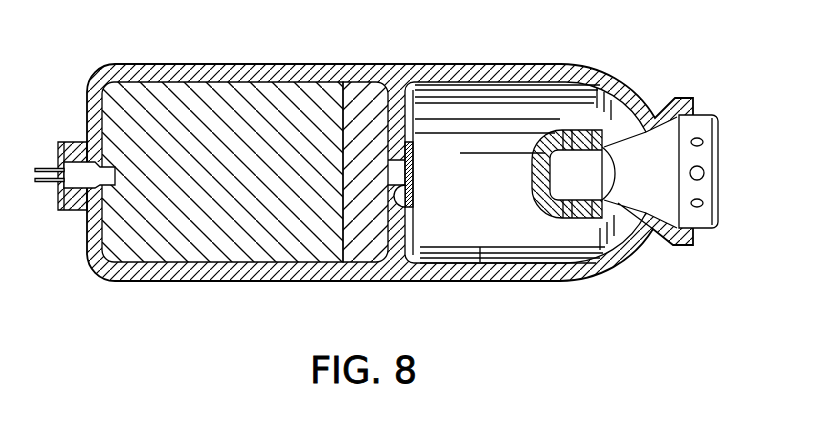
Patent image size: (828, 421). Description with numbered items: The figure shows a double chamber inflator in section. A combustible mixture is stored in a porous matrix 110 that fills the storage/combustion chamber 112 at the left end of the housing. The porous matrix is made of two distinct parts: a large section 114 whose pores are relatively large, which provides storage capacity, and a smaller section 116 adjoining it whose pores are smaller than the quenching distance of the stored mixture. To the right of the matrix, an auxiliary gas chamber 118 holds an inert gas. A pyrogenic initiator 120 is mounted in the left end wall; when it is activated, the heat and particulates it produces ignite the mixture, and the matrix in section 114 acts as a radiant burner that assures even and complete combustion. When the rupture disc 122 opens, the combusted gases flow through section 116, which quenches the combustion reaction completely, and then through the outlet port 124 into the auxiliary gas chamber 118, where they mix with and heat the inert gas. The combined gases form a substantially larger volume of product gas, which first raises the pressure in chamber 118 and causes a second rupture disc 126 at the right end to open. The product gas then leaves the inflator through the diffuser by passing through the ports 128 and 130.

The porous matrix 110 is at (258, 199).
The storage/combustion chamber 112 is at (332, 206).
The section of porous matrix with relatively large pore sizes 114 is at (193, 170).
The smaller section of porous matrix 116 is at (378, 230).
The auxiliary gas chamber 118 is at (515, 186).
The pyrogenic initiator 120 is at (78, 180).
The rupture disc 122 is at (417, 172).
The outlet port 124 is at (403, 205).
The rupture disc 126 is at (677, 196).
The port 128 is at (582, 204).
The port 130 is at (702, 212).